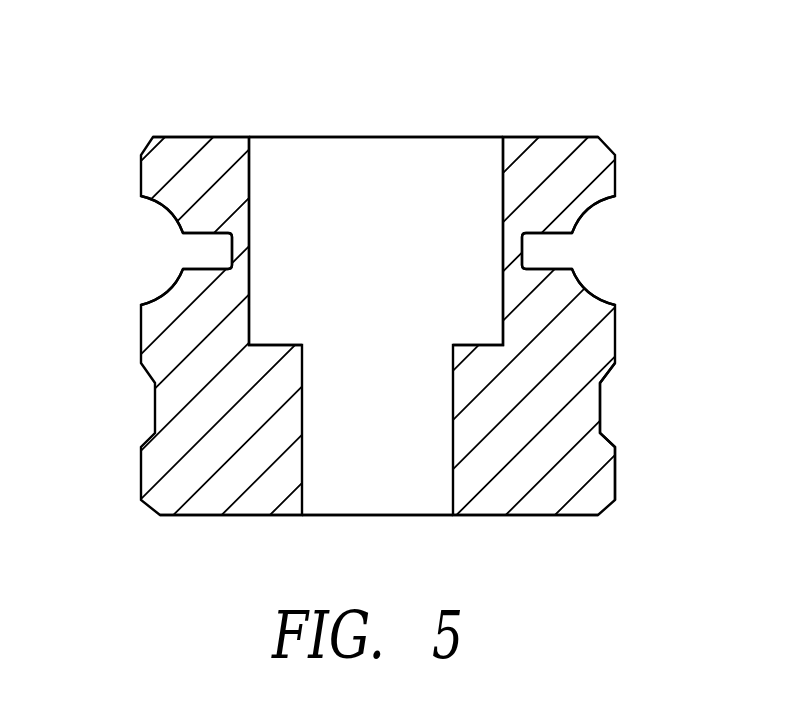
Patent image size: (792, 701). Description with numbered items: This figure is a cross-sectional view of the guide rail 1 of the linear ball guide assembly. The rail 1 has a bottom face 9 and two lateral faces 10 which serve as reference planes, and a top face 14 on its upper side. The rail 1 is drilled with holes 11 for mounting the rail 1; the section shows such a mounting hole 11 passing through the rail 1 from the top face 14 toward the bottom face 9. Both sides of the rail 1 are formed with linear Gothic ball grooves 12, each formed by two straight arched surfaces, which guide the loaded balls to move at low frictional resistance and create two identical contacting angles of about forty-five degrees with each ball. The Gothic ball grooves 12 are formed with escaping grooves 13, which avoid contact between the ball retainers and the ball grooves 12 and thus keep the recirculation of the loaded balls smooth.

The guide rail 1 is at (167, 447).
The bottom face 9 is at (520, 517).
The lateral faces 10 is at (615, 445).
The holes 11 is at (342, 188).
The Gothic ball grooves 12 is at (167, 288).
The escaping grooves 13 is at (230, 257).
The top face 14 is at (557, 138).